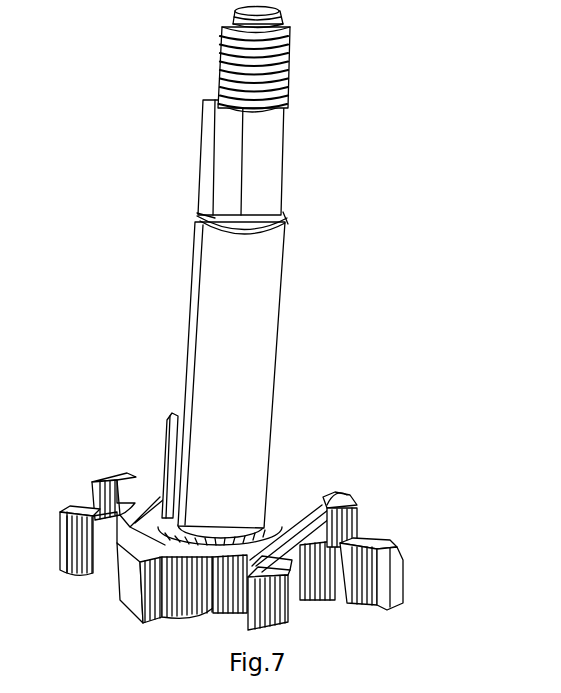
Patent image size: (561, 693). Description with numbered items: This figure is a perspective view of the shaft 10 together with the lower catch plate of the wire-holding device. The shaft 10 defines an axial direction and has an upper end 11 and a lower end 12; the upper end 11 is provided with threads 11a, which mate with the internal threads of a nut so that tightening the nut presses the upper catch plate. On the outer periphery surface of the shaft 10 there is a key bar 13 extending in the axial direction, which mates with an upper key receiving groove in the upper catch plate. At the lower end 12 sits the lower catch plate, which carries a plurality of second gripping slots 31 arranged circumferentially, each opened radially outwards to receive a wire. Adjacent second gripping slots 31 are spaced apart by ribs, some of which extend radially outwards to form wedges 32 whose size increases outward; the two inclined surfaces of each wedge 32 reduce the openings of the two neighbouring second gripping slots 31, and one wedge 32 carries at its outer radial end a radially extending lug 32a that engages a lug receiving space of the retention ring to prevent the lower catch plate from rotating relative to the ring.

The shaft 10 is at (257, 343).
The upper end 11 is at (268, 152).
The threads 11a is at (283, 68).
The lower end 12 is at (250, 510).
The key bar 13 is at (163, 460).
The second gripping slots 31 is at (88, 517).
The wedges 32 is at (342, 512).
The lug 32a is at (386, 577).